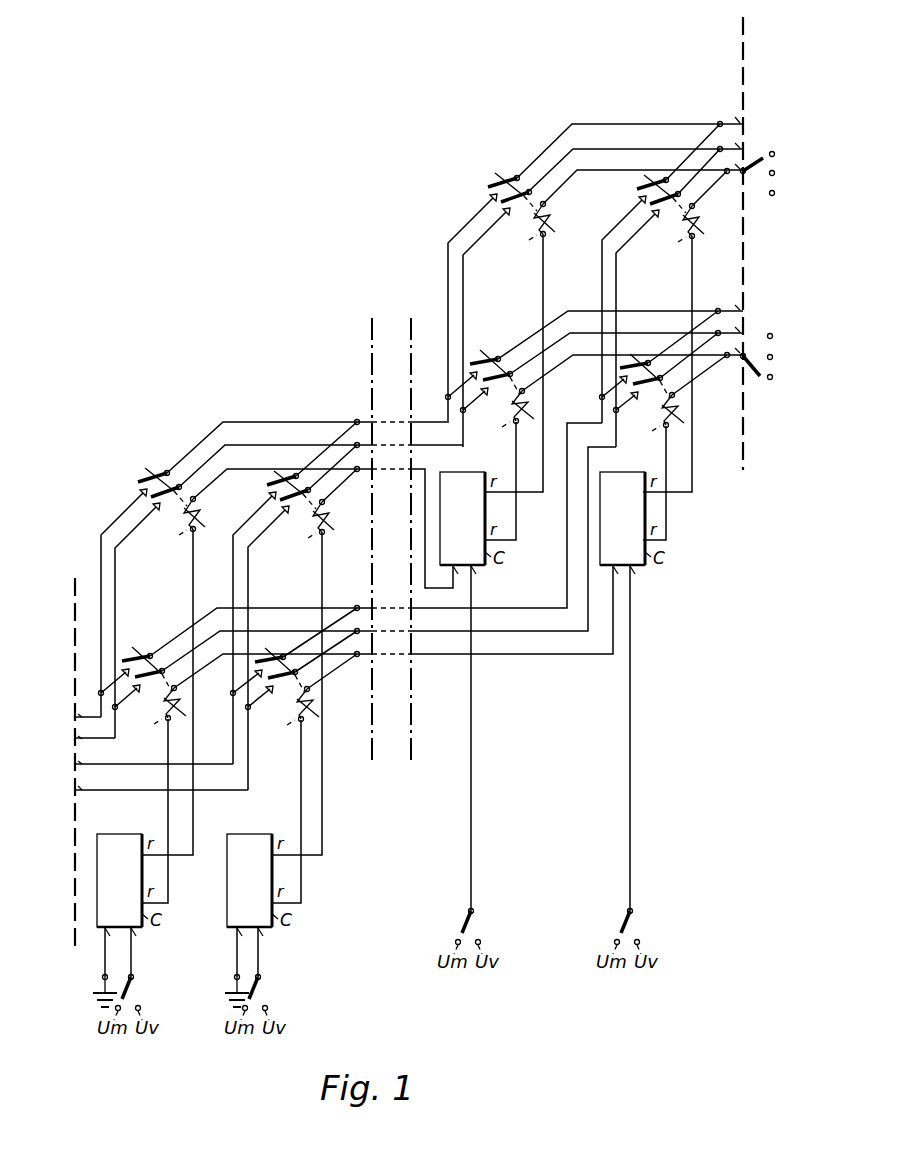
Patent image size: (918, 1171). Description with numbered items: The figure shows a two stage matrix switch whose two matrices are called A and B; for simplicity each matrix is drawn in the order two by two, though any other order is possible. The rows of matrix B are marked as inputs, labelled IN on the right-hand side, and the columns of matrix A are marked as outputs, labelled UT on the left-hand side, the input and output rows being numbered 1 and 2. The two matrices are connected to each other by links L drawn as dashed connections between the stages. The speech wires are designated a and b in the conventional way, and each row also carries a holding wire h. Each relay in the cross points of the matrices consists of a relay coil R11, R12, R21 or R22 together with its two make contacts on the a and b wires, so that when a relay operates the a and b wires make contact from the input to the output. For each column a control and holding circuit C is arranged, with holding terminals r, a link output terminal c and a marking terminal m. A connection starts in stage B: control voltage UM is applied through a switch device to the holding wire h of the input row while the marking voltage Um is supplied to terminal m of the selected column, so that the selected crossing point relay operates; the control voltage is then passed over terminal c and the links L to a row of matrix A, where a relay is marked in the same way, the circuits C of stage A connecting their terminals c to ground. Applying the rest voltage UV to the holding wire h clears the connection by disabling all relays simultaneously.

The relay coil R11 is at (327, 514).
The relay coil R12 is at (468, 515).
The relay coil R21 is at (317, 626).
The relay coil R22 is at (458, 628).
The matrix A is at (195, 708).
The matrix B is at (551, 531).
The links L is at (391, 539).
The incoming lines IN is at (786, 57).
The outgoing lines UT is at (72, 593).
The line circuit 1 is at (436, 420).
The line circuit 2 is at (435, 540).